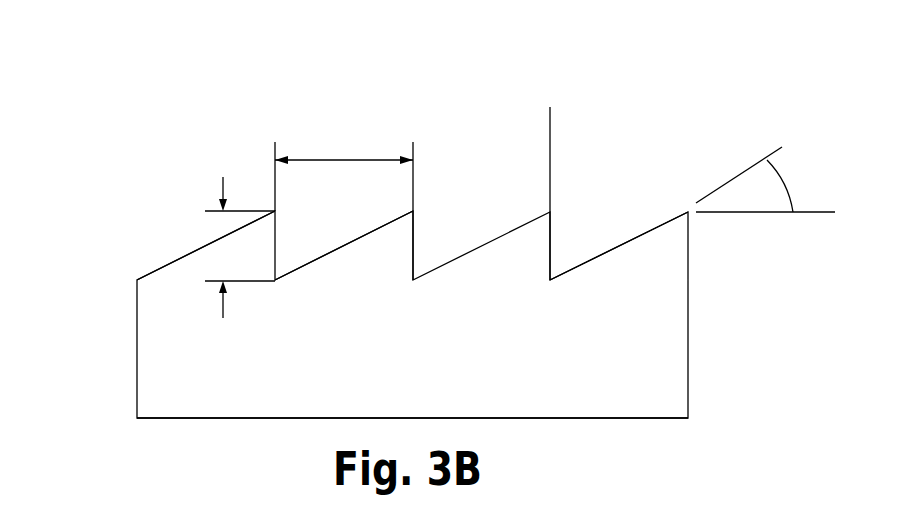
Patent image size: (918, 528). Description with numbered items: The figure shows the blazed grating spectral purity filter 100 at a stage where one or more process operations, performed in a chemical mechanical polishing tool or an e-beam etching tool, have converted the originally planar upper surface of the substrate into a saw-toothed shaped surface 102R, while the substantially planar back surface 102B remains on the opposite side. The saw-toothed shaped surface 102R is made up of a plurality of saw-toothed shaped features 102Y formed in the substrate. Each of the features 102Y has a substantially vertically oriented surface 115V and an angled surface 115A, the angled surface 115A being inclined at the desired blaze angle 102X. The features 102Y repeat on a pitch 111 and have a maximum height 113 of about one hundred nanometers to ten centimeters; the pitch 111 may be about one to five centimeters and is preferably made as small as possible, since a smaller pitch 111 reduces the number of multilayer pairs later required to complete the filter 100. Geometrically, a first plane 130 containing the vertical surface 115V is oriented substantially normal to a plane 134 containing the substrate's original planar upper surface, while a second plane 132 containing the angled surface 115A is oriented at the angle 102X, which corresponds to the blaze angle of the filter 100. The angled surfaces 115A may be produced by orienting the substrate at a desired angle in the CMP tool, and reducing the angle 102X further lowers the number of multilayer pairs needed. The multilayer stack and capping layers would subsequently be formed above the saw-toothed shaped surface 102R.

The blazed grating spectral purity filter 100 is at (145, 247).
The saw-toothed shaped surface 102R is at (151, 191).
The back surface 102B is at (550, 418).
The blaze angle 102X is at (785, 187).
The saw-toothed shaped features 102Y is at (542, 237).
The pitch 111 is at (333, 158).
The maximum height 113 is at (223, 307).
The angled surface 115A is at (325, 255).
The substantially vertically oriented surface 115V is at (413, 245).
The first plane 130 is at (548, 135).
The second plane 132 is at (737, 175).
The plane containing the substantially planar upper surface 134 is at (758, 213).